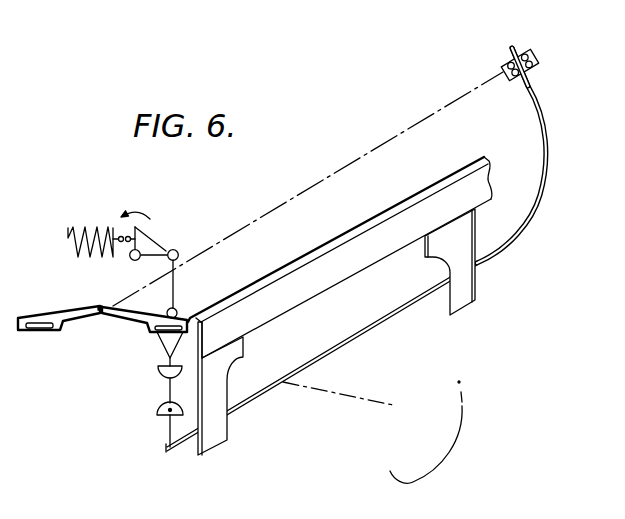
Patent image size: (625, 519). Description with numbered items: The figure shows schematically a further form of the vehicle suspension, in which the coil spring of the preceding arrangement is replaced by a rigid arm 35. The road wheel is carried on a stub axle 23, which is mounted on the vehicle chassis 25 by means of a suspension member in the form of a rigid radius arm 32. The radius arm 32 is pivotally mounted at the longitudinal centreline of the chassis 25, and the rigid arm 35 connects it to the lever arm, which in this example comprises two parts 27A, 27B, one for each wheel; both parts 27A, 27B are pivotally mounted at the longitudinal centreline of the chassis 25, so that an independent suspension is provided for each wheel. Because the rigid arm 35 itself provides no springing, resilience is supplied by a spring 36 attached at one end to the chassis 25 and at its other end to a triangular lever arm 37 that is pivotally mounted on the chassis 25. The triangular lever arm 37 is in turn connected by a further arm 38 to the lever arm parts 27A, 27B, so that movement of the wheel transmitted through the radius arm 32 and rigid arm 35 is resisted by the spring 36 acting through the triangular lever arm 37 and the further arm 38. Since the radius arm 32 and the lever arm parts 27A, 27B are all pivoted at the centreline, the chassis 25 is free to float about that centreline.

The stub axle 23 is at (336, 366).
The vehicle chassis 25 is at (362, 224).
The lever arm part 27A is at (133, 318).
The lever arm part 27B is at (82, 316).
The radius arm 32 is at (402, 307).
The rigid arm 35 is at (167, 389).
The spring 36 is at (85, 224).
The triangular lever arm 37 is at (150, 242).
The further arm 38 is at (176, 280).